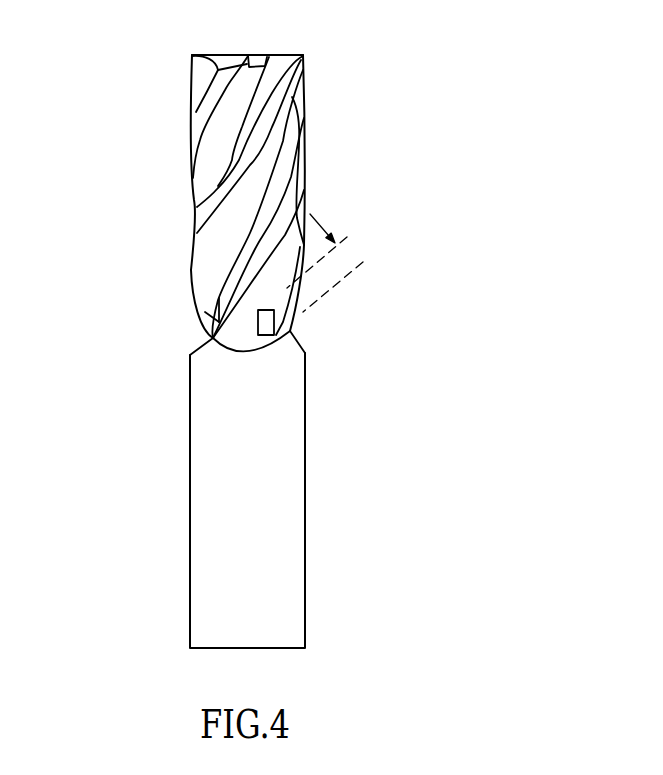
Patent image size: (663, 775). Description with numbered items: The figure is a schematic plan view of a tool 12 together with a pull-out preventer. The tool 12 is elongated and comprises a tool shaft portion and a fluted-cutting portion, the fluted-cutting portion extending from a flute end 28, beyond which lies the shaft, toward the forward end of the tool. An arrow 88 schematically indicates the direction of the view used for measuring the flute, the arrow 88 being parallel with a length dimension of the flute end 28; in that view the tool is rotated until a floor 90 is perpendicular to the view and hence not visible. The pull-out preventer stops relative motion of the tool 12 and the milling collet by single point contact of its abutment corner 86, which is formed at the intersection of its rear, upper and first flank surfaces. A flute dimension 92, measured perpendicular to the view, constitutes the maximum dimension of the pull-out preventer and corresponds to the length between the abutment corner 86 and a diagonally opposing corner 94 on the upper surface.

The tool 12 is at (395, 102).
The flute end 28 is at (222, 380).
The arrow 88 is at (95, 395).
The diagonally opposing corner 94 is at (292, 322).
The abutment corner 86 is at (276, 340).
The floor 90 is at (238, 343).
The flute dimension 92 is at (361, 276).